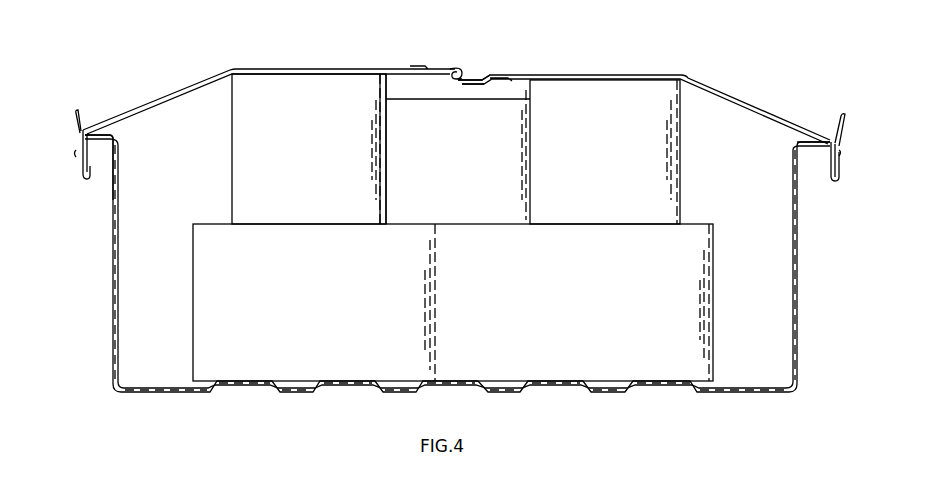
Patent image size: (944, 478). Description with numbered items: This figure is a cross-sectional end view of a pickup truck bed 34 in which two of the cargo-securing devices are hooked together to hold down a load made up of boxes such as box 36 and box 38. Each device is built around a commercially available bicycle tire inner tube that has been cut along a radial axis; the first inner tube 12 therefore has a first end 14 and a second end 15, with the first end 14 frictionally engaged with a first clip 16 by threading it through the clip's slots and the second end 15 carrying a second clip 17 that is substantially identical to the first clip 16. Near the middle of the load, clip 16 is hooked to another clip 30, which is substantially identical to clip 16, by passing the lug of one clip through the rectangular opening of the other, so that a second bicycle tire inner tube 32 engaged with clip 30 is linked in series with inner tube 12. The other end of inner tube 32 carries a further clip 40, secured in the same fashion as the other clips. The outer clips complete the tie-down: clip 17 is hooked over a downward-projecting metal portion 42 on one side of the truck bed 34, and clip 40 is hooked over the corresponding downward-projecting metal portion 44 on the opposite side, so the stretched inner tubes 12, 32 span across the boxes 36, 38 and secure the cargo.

The bicycle tire inner tube 12 is at (572, 73).
The first end 14 is at (508, 86).
The second end 15 is at (842, 120).
The first clip 16 is at (480, 78).
The second clip 17 is at (839, 168).
The second clip 30 is at (445, 68).
The bicycle tire inner tube 32 is at (306, 70).
The pickup truck bed 34 is at (797, 328).
The box 36 is at (258, 76).
The box 38 is at (386, 115).
The clip 40 is at (76, 160).
The downward-projecting metal portion 42 is at (830, 165).
The downward-projecting metal portion 44 is at (118, 160).